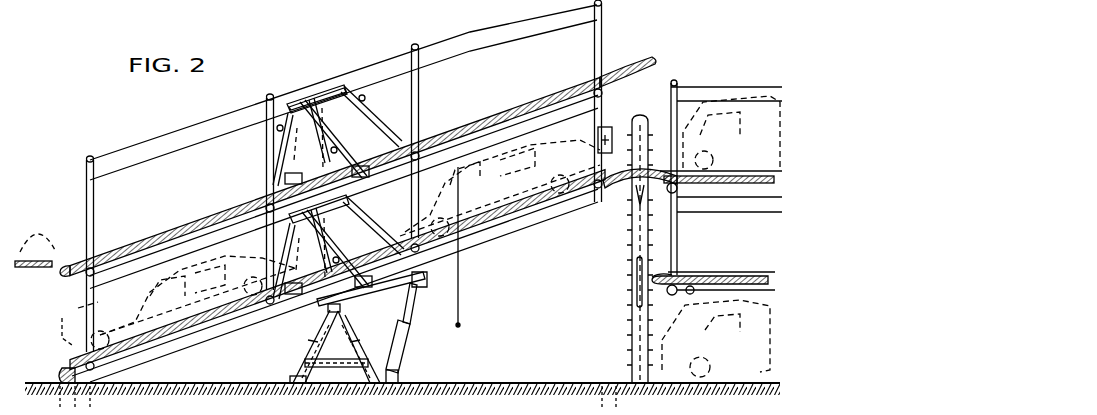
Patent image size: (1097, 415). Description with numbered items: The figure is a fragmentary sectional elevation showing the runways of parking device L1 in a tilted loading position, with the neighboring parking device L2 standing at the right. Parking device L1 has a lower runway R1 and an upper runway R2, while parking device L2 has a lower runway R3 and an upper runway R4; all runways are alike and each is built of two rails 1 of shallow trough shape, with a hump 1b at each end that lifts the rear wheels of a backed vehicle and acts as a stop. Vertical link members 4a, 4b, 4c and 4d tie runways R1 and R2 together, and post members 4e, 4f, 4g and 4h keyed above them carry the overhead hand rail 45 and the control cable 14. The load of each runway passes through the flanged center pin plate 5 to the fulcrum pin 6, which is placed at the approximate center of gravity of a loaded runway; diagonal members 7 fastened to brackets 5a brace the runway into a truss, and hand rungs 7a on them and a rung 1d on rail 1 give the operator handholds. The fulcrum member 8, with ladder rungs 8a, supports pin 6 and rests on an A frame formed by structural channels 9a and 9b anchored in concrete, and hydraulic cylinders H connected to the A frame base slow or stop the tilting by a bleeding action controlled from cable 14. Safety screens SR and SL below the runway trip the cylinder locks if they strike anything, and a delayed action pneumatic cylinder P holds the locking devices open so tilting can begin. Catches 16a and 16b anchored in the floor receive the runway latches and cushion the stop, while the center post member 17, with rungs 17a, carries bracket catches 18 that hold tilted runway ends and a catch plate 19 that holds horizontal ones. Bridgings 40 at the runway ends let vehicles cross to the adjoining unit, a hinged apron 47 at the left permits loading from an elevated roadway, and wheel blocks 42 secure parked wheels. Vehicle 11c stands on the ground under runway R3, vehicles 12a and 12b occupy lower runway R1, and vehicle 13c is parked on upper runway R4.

The rail 1 is at (185, 222).
The hump 1b is at (72, 262).
The rung 1d is at (392, 152).
The vertical link member 4a is at (75, 305).
The vertical link member 4b is at (193, 300).
The vertical link member 4c is at (443, 247).
The vertical link member 4d is at (598, 176).
The post member 4e is at (86, 191).
The post member 4f is at (266, 176).
The post member 4g is at (419, 100).
The post member 4h is at (594, 28).
The center pin plate 5 is at (337, 174).
The bracket 5a is at (292, 99).
The fulcrum pin 6 is at (338, 126).
The diagonal member 7 is at (381, 214).
The hand rung 7a is at (365, 99).
The fulcrum member 8 is at (348, 311).
The ladder rung 8a is at (293, 372).
The structural channel 9a is at (312, 336).
The structural channel 9b is at (336, 355).
The vehicle 11c is at (716, 338).
The vehicle 12a is at (597, 140).
The vehicle 12b is at (64, 334).
The vehicle 13c is at (746, 102).
The control cable 14 is at (459, 56).
The catch 16a is at (92, 396).
The catch 16b is at (603, 384).
The center post member 17 is at (641, 114).
The rung 17a is at (631, 328).
The bracket catch 18 is at (630, 196).
The catch plate 19 is at (634, 300).
The bridging 40 is at (646, 60).
The wheel block 42 is at (500, 188).
The overhead hand rail 45 is at (170, 136).
The hinged apron 47 is at (35, 267).
The hydraulic cylinder H is at (408, 345).
The parking device L1 is at (336, 358).
The parking device L2 is at (712, 290).
The pneumatic cylinder P is at (612, 130).
The lower runway R1 is at (146, 340).
The upper runway R2 is at (141, 228).
The lower runway R3 is at (748, 275).
The upper runway R4 is at (721, 177).
The safety screen SL is at (211, 345).
The safety screen SR is at (492, 245).